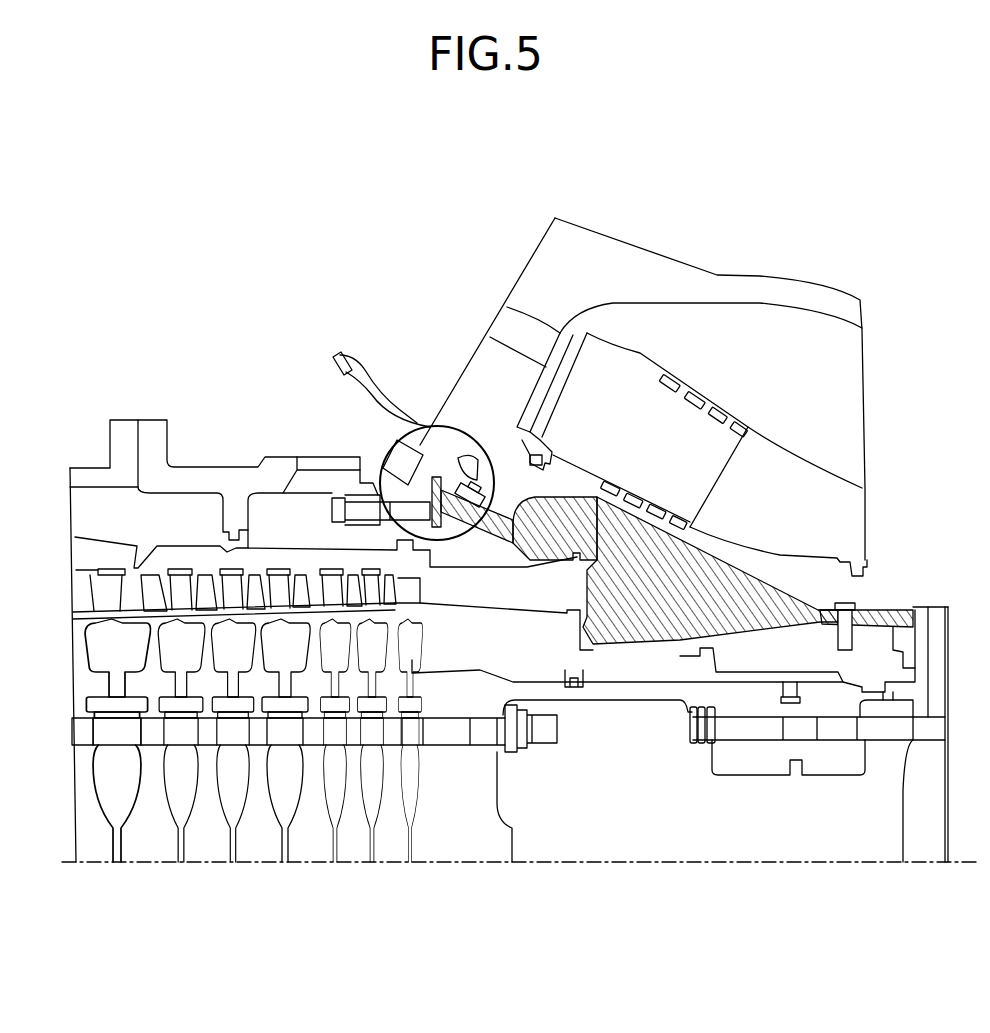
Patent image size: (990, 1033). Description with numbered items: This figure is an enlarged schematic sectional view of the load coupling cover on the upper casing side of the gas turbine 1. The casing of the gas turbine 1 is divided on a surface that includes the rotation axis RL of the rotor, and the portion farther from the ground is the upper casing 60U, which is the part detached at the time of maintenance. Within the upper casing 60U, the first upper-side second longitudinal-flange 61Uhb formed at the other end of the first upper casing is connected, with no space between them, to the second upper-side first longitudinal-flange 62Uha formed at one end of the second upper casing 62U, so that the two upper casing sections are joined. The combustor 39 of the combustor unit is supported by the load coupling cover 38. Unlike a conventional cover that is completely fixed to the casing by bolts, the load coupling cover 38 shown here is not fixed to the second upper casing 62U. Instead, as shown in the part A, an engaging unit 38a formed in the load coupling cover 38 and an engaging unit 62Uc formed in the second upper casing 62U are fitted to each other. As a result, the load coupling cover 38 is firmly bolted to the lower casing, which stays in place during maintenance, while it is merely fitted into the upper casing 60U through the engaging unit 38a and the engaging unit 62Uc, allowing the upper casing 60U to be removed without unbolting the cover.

The gas turbine 1 is at (856, 181).
The upper casing 60U is at (622, 226).
The second upper casing 62U is at (522, 268).
The engaging unit of the second member 62Uc is at (447, 483).
The second upper-side first longitudinal-flange 62Uha is at (148, 418).
The first upper-side second longitudinal-flange 61Uhb is at (125, 418).
The part A is at (457, 425).
The combustor 39 is at (724, 397).
The engaging unit of the load coupling cover 38a is at (438, 487).
The load coupling cover 38 is at (627, 630).
The rotation axis RL is at (505, 863).